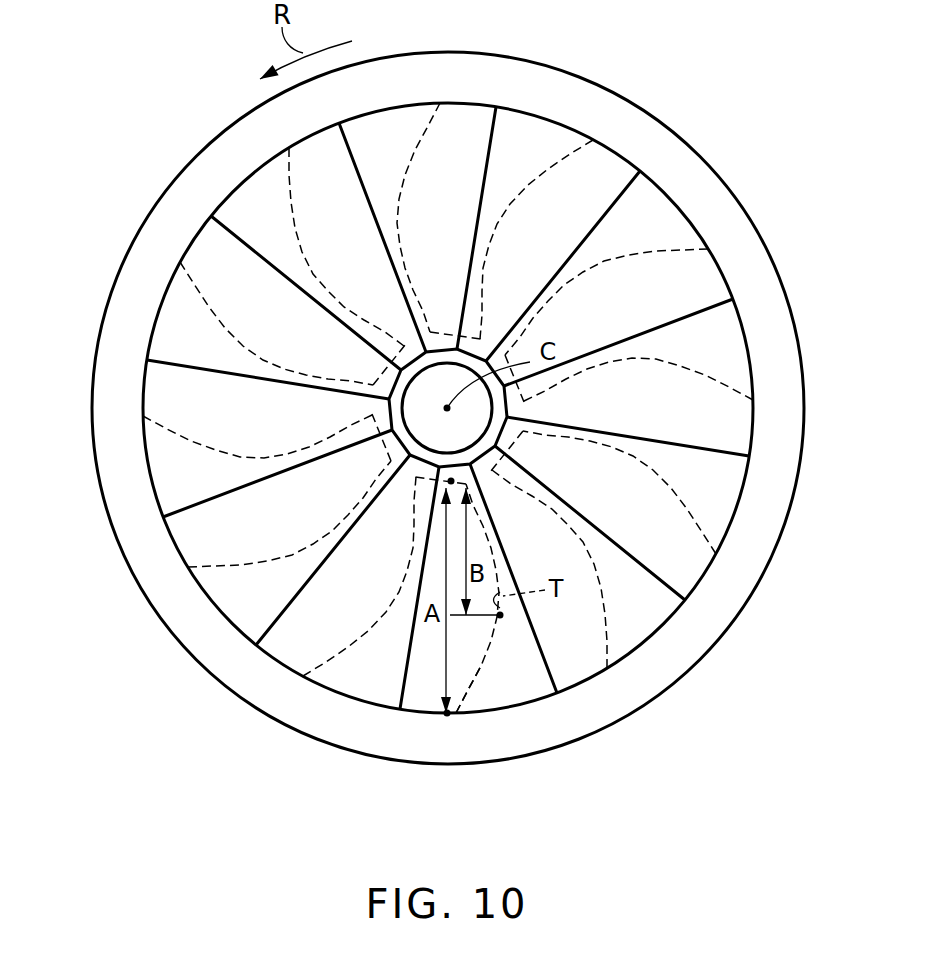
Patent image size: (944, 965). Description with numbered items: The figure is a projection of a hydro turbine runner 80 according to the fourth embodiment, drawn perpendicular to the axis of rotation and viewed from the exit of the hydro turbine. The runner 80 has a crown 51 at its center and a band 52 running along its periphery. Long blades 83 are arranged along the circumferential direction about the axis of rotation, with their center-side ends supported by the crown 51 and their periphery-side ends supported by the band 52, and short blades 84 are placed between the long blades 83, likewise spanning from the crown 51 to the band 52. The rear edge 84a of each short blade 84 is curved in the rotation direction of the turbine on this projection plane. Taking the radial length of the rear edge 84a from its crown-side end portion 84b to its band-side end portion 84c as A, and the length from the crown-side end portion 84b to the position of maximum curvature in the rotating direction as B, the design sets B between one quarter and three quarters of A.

The hydro turbine runner 80 is at (422, 434).
The band 52 is at (742, 215).
The crown 51 is at (269, 410).
The long blades 83 is at (567, 633).
The short blades 84 is at (448, 460).
The rear edge 84a is at (528, 685).
The crown-side end portion 84b is at (407, 463).
The band-side end portion 84c is at (448, 713).